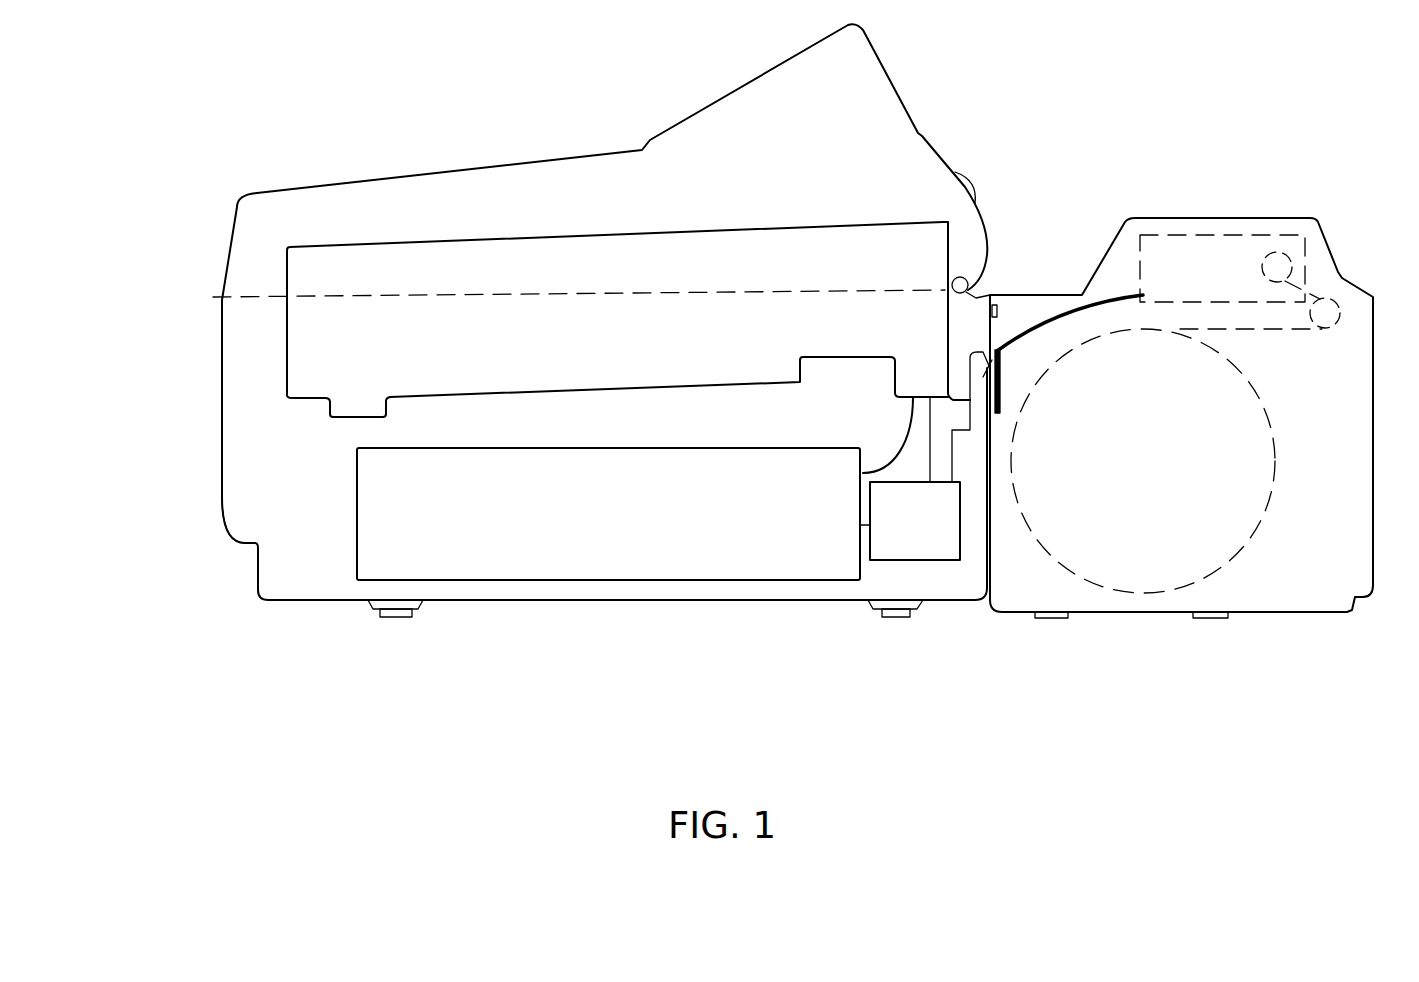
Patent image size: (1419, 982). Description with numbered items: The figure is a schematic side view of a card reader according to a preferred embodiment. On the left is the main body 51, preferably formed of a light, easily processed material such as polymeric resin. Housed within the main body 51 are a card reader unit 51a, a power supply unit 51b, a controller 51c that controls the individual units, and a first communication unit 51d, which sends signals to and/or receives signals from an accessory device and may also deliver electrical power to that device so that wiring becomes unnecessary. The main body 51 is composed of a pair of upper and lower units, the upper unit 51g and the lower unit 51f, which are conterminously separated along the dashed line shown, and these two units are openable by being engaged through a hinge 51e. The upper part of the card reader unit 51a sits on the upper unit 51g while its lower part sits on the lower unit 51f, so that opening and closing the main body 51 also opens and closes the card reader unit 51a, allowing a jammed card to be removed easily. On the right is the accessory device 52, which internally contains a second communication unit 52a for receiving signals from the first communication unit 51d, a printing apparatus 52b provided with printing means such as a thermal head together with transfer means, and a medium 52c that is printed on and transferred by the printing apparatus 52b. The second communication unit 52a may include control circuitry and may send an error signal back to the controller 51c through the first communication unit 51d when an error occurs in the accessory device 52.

The main body 51 is at (467, 602).
The card reader unit 51a is at (857, 248).
The power supply unit 51b is at (722, 550).
The controller 51c is at (920, 538).
The first communication unit 51d is at (973, 360).
The hinge 51e is at (958, 283).
The lower unit 51f is at (245, 475).
The upper unit 51g is at (270, 192).
The accessory device 52 is at (1165, 613).
The second communication unit 52a is at (1000, 413).
The printing apparatus 52b is at (1240, 247).
The medium 52c is at (1245, 545).